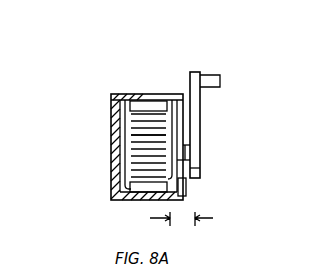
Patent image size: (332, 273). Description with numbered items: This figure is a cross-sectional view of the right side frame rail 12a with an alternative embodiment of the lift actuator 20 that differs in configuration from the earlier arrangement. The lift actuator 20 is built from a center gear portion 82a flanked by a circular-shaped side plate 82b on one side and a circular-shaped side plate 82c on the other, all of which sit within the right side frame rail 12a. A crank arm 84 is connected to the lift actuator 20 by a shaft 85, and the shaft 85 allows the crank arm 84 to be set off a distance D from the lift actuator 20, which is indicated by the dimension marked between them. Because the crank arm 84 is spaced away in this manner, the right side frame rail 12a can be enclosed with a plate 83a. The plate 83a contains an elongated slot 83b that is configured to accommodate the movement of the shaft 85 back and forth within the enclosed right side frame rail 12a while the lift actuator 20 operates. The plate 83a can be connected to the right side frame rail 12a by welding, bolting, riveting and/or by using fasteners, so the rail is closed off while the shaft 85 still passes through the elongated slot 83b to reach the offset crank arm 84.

The right side frame rail 12a is at (120, 96).
The center gear portion 82a is at (148, 120).
The lift actuator 20 is at (140, 133).
The circular-shaped side plate 82b is at (114, 152).
The circular-shaped side plate 82c is at (187, 190).
The plate 83a is at (188, 86).
The elongated slot 83b is at (197, 168).
The crank arm 84 is at (200, 112).
The shaft 85 is at (185, 150).
The distance D is at (181, 219).